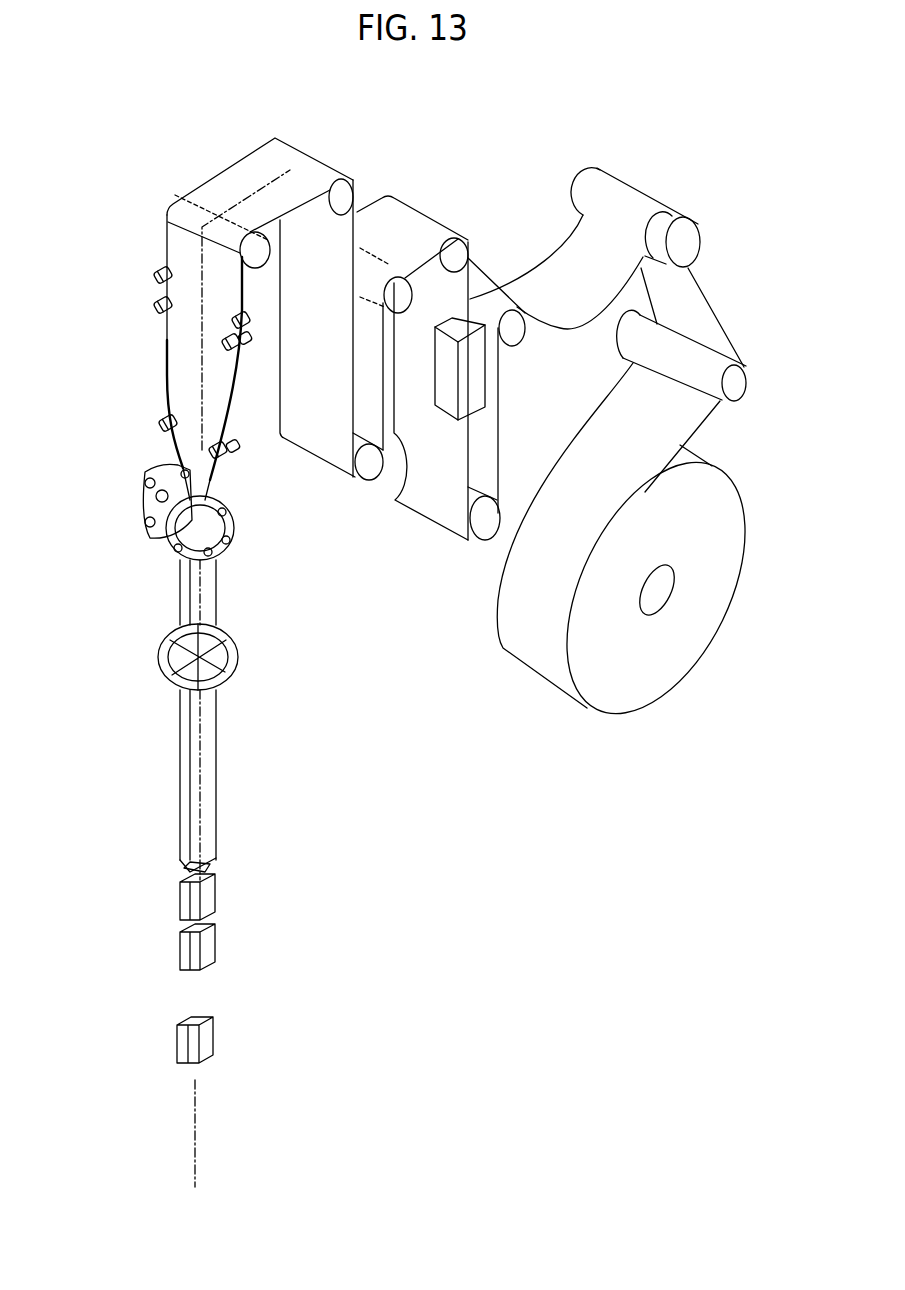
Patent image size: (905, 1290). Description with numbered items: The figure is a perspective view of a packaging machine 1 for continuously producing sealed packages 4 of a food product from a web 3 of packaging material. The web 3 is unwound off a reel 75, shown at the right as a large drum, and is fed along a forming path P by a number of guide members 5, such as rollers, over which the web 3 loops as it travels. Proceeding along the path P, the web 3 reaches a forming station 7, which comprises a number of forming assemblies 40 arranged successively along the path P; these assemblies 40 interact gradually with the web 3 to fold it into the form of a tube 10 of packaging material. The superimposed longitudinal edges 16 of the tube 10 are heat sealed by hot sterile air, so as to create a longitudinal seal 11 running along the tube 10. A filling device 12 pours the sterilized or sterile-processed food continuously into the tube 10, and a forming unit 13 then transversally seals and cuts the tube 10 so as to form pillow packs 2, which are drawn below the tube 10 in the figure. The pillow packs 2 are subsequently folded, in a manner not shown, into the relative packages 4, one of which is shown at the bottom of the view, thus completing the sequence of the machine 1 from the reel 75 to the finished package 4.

The packaging machine 1 is at (557, 123).
The forming path P is at (247, 192).
The guide members 5 is at (356, 186).
The web of packaging material 3 is at (628, 207).
The superimposed longitudinal edges 16 is at (393, 490).
The reel 75 is at (733, 527).
The forming assemblies 40 is at (153, 307).
The forming station 7 is at (145, 434).
The filling device 12 is at (192, 453).
The forming unit 13 is at (237, 537).
The longitudinal seal 11 is at (185, 592).
The tube of packaging material 10 is at (207, 817).
The pillow packs 2 is at (205, 902).
The sealed packages 4 is at (210, 1047).